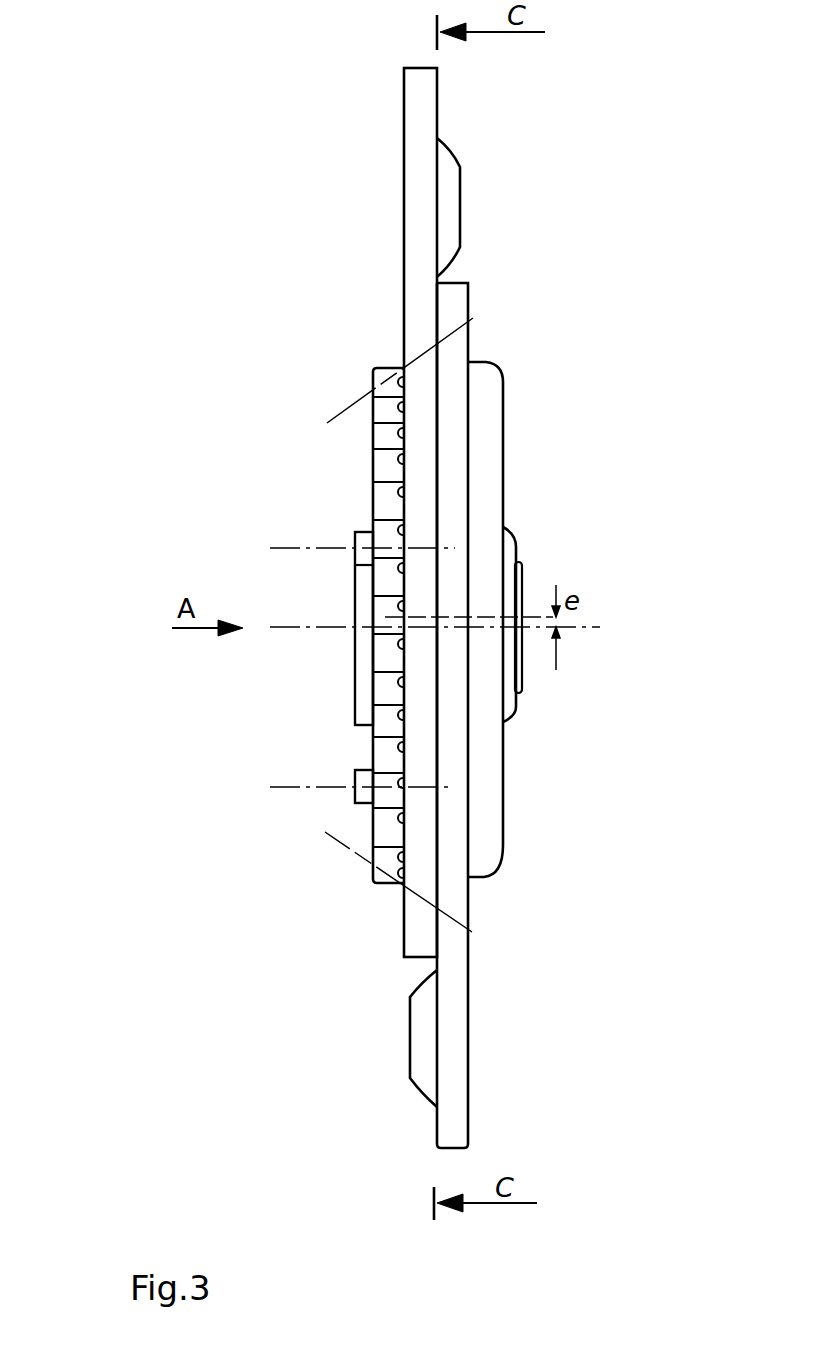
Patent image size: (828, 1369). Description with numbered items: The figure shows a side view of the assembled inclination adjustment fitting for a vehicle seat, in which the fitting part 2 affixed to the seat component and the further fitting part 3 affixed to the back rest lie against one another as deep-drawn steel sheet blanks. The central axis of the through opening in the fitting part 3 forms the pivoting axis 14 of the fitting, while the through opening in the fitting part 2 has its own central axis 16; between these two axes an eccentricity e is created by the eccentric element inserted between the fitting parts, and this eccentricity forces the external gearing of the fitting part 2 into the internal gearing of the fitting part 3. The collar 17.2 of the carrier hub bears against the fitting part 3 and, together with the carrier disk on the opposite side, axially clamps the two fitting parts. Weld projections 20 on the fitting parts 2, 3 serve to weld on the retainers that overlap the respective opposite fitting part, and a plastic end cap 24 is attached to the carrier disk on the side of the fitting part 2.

The fitting part 2 is at (464, 1000).
The further fitting part 3 is at (417, 256).
The pivoting axis 14 is at (297, 632).
The central axis 16 is at (552, 618).
The collar 17.2 is at (365, 703).
The weld projections 20 is at (455, 211).
The plastic end cap 24 is at (492, 405).